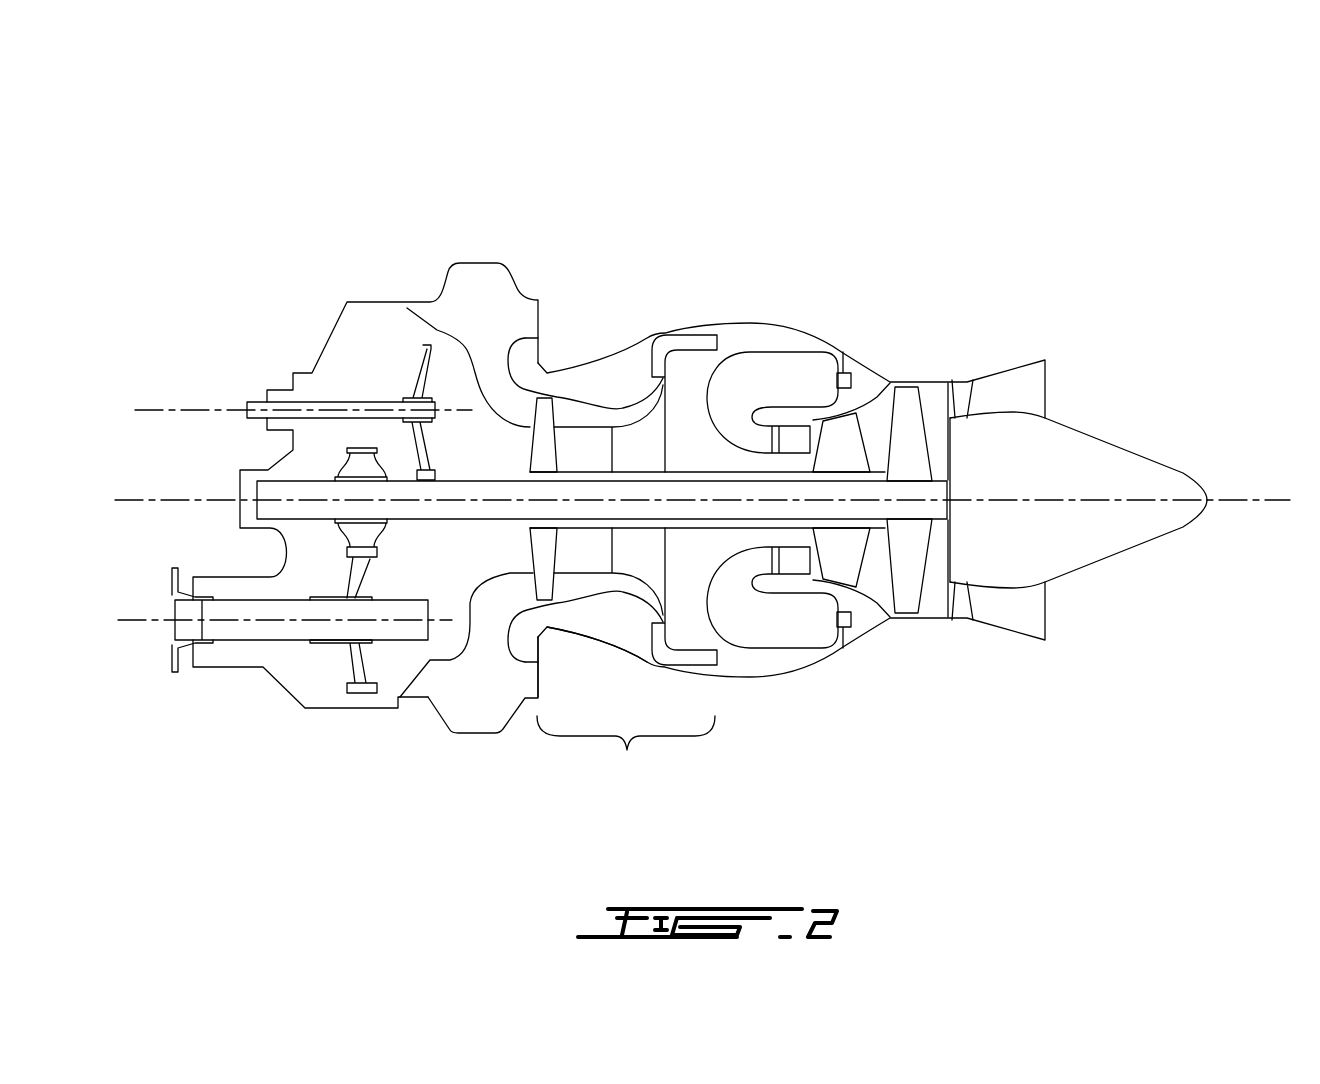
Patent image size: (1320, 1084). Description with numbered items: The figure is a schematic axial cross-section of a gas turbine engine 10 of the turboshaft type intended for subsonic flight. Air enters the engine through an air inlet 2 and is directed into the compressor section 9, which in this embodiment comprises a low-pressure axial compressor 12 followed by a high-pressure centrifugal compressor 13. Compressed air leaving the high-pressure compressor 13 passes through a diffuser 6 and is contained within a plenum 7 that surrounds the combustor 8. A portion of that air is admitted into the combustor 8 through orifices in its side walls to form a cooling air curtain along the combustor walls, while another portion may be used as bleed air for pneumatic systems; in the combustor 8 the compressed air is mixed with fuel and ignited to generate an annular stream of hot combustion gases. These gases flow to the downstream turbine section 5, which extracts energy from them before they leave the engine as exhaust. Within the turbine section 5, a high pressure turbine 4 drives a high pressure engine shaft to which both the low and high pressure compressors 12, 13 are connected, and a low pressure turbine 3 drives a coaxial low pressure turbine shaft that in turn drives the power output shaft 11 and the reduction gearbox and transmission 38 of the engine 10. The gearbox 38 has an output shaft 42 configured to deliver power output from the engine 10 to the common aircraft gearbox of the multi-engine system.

The gas turbine engine 10 is at (915, 182).
The reduction gearbox and transmission 38 is at (368, 360).
The output shaft 42 is at (233, 632).
The air inlet 2 is at (480, 736).
The power output shaft 11 is at (463, 480).
The low-pressure axial compressor 12 is at (543, 413).
The high-pressure centrifugal compressor 13 is at (638, 447).
The diffuser 6 is at (687, 340).
The combustor 8 is at (775, 370).
The compressor section 9 is at (626, 707).
The plenum 7 is at (758, 660).
The high pressure turbine 4 is at (832, 557).
The turbine section 5 is at (873, 578).
The low pressure turbine 3 is at (907, 593).